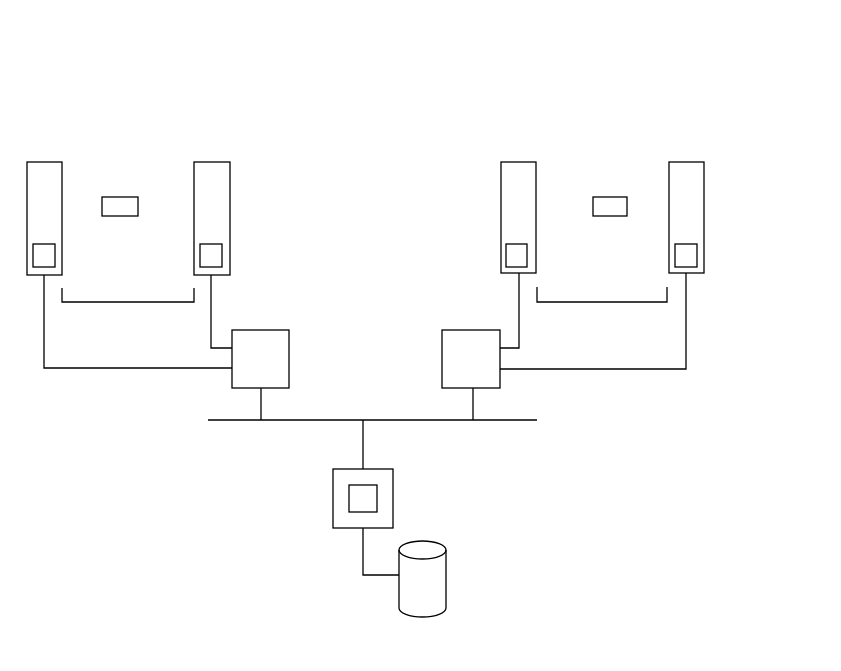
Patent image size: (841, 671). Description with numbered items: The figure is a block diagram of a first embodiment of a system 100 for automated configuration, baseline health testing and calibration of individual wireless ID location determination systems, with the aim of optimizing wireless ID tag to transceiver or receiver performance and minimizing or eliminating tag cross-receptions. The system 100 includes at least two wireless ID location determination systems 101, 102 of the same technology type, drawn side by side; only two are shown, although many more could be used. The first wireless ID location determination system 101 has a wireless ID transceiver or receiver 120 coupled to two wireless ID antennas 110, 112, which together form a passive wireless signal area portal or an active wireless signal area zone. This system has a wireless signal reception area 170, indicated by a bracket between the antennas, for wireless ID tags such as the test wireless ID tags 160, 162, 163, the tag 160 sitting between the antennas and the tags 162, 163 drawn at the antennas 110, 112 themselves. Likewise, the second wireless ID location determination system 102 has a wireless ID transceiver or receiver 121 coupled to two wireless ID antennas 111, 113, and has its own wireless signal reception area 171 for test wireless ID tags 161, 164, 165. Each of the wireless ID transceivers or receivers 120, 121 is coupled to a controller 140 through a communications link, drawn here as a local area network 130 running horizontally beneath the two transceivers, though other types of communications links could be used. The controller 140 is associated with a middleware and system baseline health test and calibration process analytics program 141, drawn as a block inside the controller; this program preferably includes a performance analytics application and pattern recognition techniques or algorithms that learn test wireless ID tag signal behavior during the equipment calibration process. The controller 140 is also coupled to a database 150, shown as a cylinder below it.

The system 100 is at (362, 83).
The wireless ID location determination system 101 is at (160, 102).
The wireless ID location determination system 102 is at (570, 102).
The wireless ID antenna 110 is at (45, 162).
The wireless ID antenna 111 is at (519, 162).
The wireless ID antenna 112 is at (213, 162).
The wireless ID antenna 113 is at (688, 162).
The wireless ID transceiver or receiver 120 is at (267, 330).
The wireless ID transceiver or receiver 121 is at (462, 330).
The local area network 130 is at (492, 421).
The controller 140 is at (393, 494).
The middleware and system baseline health test and calibration process analytics pro 141 is at (349, 498).
The database 150 is at (446, 575).
The test wireless ID tag 160 is at (120, 197).
The test wireless ID tag 161 is at (611, 197).
The test wireless ID tag 162 is at (55, 254).
The test wireless ID tag 163 is at (222, 254).
The test wireless ID tag 164 is at (527, 254).
The test wireless ID tag 165 is at (697, 254).
The wireless signal reception area 170 is at (125, 302).
The wireless signal reception area 171 is at (605, 302).